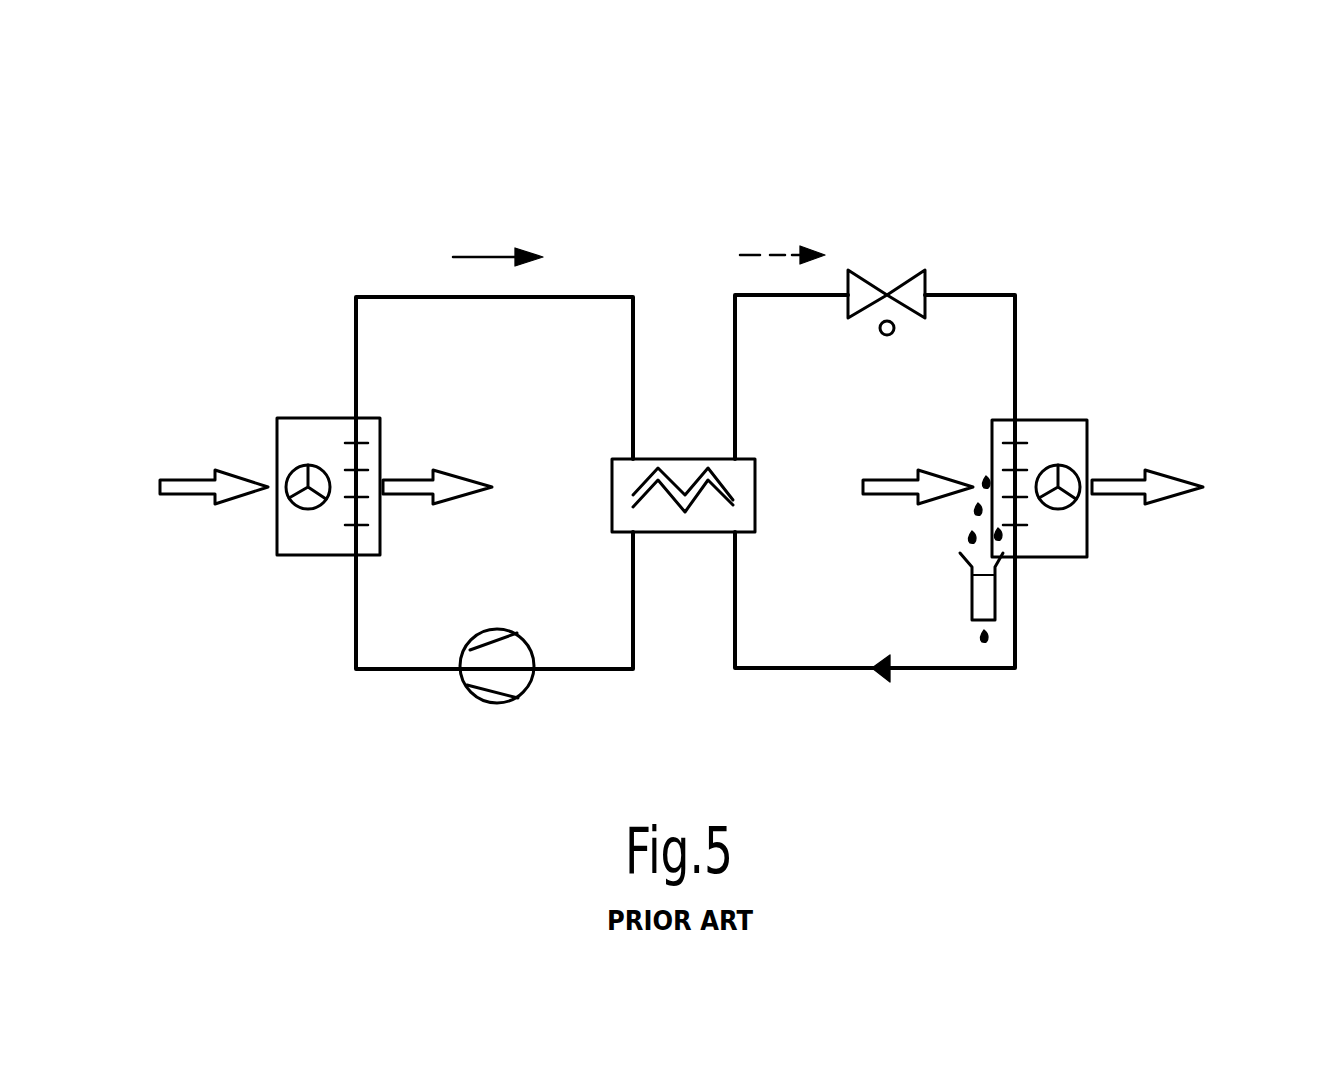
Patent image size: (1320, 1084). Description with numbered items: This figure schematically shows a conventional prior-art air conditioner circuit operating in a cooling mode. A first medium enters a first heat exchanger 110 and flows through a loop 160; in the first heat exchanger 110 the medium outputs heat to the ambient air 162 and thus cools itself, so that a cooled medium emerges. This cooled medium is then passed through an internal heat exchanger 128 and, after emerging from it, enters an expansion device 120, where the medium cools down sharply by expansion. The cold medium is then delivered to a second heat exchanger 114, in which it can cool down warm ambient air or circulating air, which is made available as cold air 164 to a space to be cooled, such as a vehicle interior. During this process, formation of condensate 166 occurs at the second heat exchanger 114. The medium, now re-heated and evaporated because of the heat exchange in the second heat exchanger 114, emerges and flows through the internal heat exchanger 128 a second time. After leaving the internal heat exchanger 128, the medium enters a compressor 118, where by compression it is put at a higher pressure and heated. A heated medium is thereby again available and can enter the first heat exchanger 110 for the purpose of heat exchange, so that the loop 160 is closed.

The first heat exchanger 110 is at (300, 540).
The second heat exchanger 114 is at (1062, 430).
The compressor 118 is at (530, 690).
The expansion device 120 is at (905, 280).
The internal heat exchanger 128 is at (688, 540).
The loop 160 is at (605, 295).
The ambient air 162 is at (190, 505).
The cold air 164 is at (1162, 508).
The condensate 166 is at (967, 600).